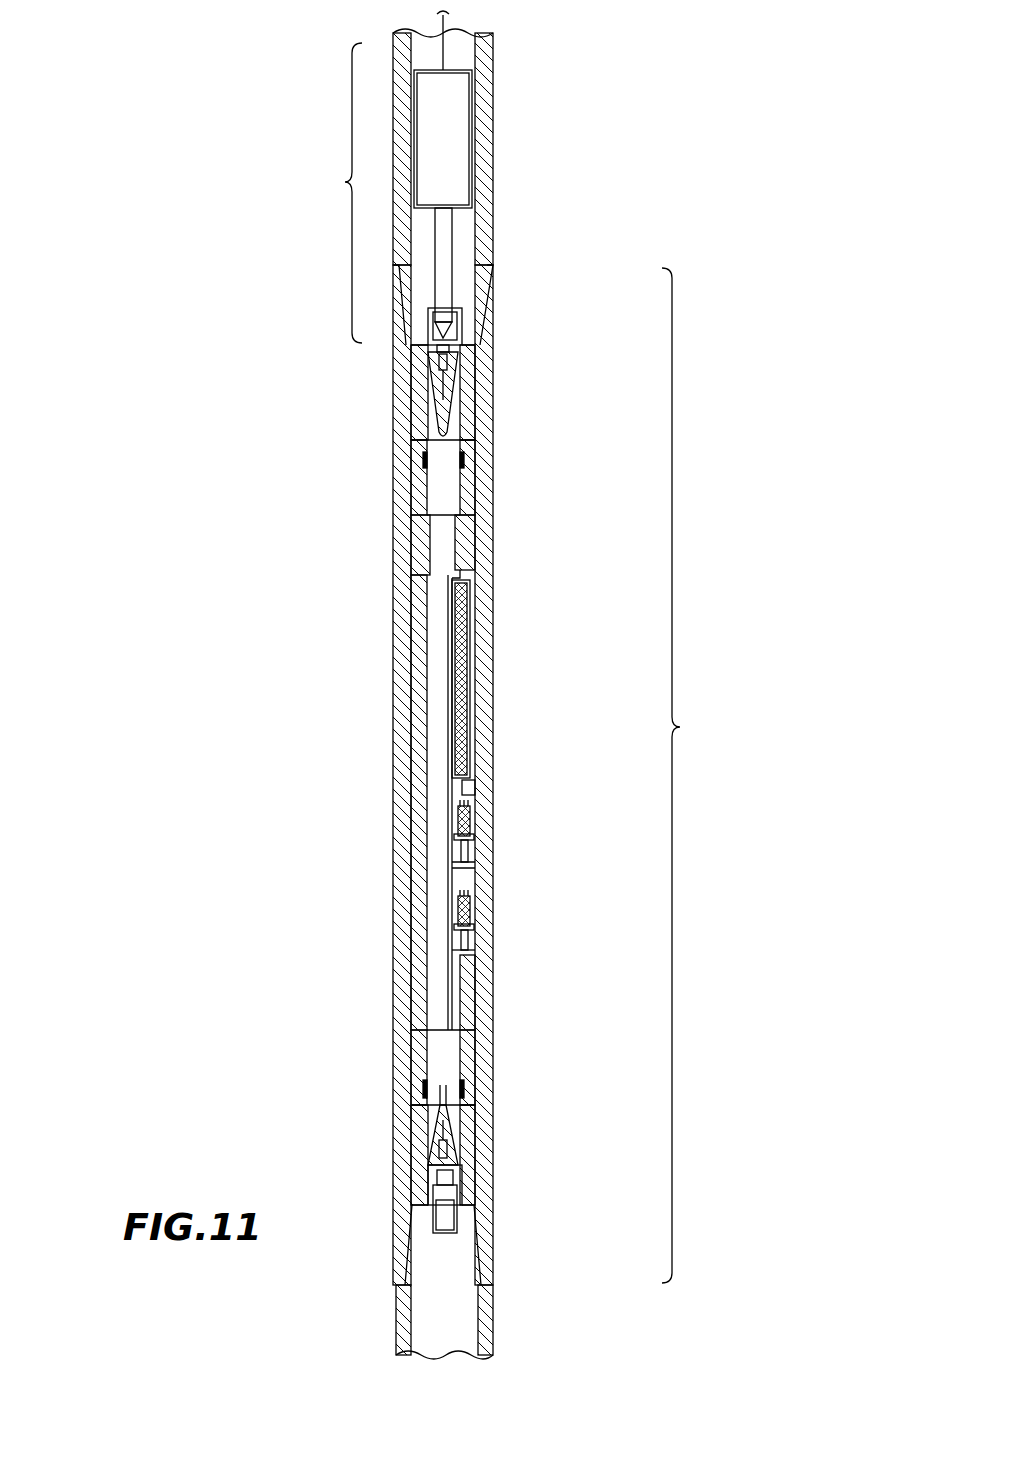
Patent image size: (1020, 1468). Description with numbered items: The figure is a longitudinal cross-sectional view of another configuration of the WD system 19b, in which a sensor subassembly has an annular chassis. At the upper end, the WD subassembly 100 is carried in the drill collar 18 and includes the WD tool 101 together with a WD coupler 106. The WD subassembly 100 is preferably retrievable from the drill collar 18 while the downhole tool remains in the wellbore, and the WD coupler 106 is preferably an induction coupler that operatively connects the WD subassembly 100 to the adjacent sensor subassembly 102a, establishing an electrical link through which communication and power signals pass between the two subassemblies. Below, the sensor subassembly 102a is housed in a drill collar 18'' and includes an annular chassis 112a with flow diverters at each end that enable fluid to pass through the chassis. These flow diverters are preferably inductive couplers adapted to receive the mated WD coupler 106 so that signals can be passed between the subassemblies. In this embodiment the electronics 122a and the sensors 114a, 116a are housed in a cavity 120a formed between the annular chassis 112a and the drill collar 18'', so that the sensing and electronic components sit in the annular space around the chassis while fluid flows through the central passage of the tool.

The WD system 19b is at (158, 138).
The drill collar 18 is at (496, 138).
The WD tool 101 is at (460, 128).
The WD coupler 106 is at (452, 243).
The drill collar 18'' is at (510, 351).
The WD subassembly 100 is at (345, 182).
The sensor subassembly 102a is at (680, 727).
The annular chassis 112a is at (418, 772).
The electronics 122a is at (452, 677).
The cavity 120a is at (470, 785).
The sensor 116a is at (470, 818).
The sensor 114a is at (470, 912).